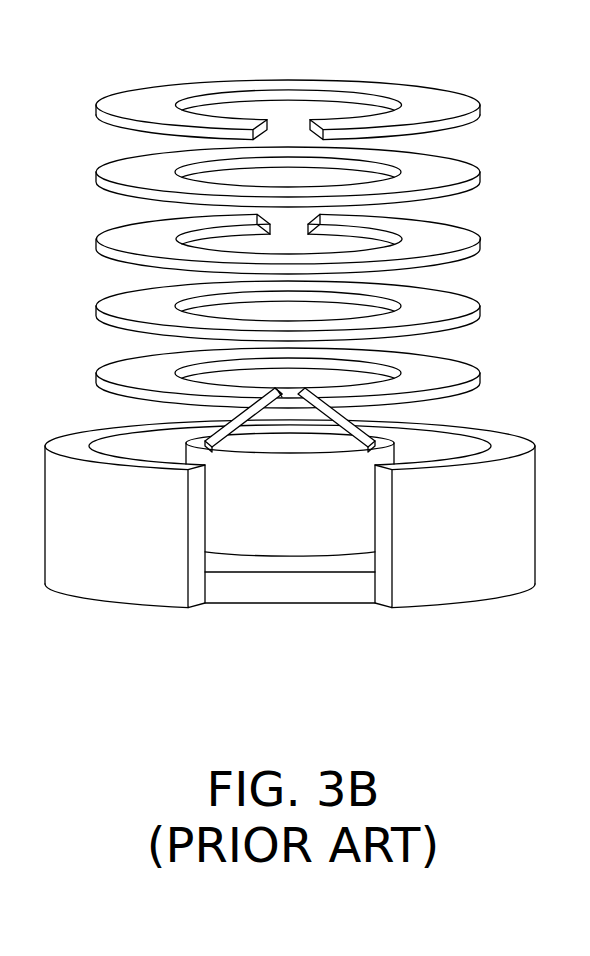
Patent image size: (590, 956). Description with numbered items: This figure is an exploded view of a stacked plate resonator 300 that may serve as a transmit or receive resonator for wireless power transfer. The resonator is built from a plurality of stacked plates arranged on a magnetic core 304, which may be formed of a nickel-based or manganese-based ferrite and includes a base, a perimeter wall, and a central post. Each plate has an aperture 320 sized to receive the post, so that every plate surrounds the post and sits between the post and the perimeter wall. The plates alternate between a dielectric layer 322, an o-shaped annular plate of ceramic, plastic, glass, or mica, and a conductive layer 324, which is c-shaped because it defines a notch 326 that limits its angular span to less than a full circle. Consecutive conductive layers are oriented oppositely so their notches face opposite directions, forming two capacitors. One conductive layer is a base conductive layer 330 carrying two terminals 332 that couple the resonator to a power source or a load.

The stacked plate resonator 300 is at (283, 355).
The magnetic core 304 is at (58, 617).
The aperture 320 is at (257, 100).
The dielectric layer 322 is at (482, 169).
The conductive layer 324 is at (331, 81).
The notch 326 is at (299, 117).
The base conductive layer 330 is at (447, 356).
The terminals 332 is at (240, 418).